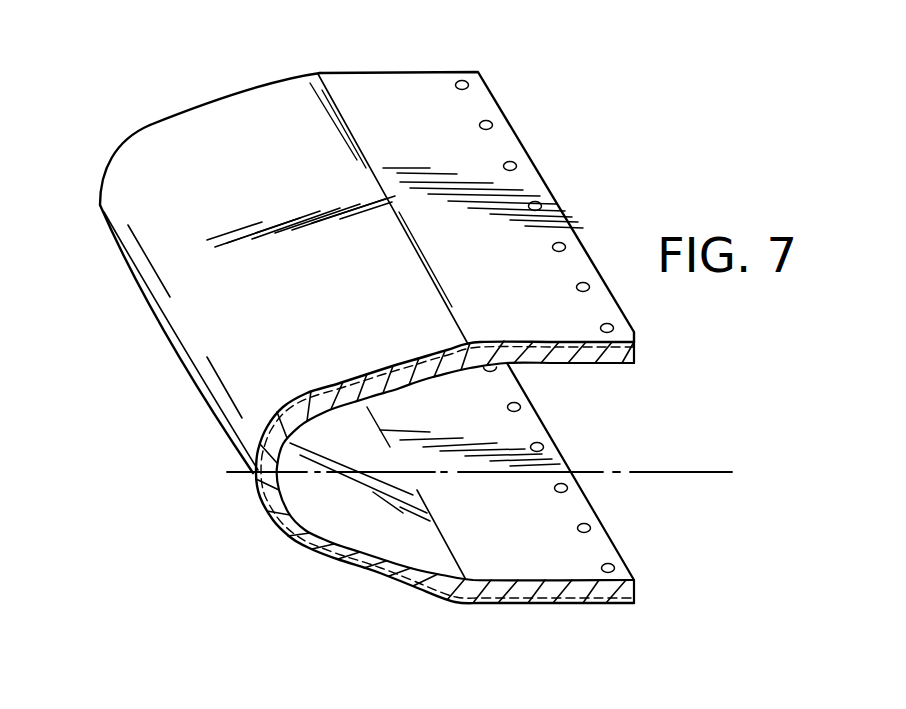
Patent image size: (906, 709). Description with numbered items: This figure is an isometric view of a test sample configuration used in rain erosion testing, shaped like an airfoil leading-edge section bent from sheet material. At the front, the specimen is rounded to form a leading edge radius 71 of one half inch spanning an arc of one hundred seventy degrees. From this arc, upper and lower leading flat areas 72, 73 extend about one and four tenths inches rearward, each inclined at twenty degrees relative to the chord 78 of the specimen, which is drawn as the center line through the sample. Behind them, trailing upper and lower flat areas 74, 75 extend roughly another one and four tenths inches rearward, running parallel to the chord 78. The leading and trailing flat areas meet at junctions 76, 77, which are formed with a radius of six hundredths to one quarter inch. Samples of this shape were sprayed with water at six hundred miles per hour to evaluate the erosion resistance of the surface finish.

The leading edge radius 71 is at (105, 173).
The upper leading flat area 72 is at (238, 115).
The lower leading flat area 73 is at (357, 567).
The trailing upper flat area 74 is at (395, 78).
The trailing lower flat area 75 is at (577, 607).
The junction 76 is at (322, 78).
The junction 77 is at (458, 603).
The chord 78 is at (687, 470).